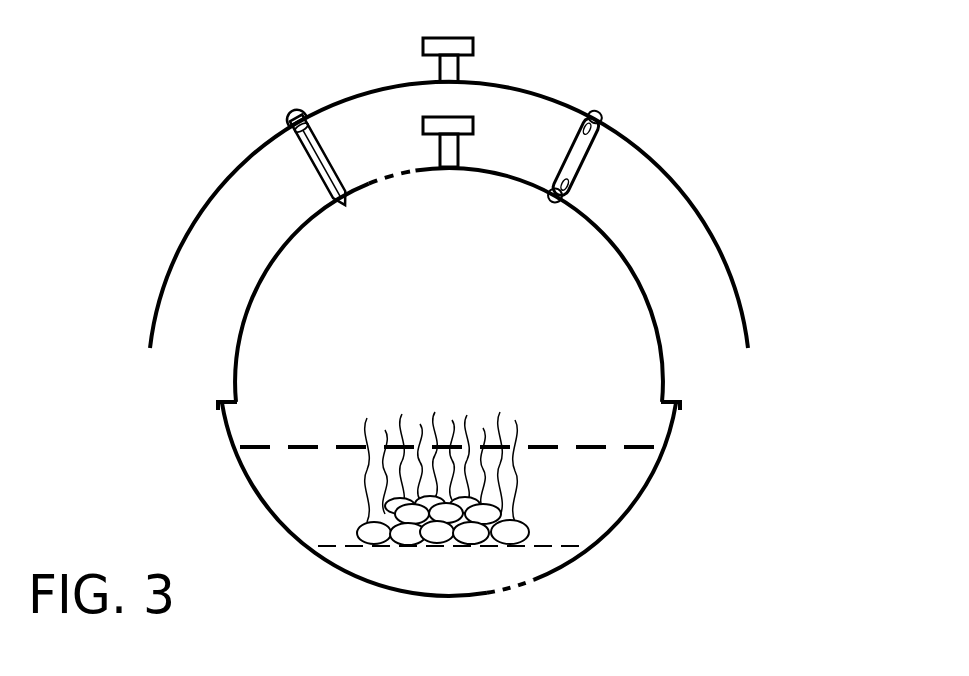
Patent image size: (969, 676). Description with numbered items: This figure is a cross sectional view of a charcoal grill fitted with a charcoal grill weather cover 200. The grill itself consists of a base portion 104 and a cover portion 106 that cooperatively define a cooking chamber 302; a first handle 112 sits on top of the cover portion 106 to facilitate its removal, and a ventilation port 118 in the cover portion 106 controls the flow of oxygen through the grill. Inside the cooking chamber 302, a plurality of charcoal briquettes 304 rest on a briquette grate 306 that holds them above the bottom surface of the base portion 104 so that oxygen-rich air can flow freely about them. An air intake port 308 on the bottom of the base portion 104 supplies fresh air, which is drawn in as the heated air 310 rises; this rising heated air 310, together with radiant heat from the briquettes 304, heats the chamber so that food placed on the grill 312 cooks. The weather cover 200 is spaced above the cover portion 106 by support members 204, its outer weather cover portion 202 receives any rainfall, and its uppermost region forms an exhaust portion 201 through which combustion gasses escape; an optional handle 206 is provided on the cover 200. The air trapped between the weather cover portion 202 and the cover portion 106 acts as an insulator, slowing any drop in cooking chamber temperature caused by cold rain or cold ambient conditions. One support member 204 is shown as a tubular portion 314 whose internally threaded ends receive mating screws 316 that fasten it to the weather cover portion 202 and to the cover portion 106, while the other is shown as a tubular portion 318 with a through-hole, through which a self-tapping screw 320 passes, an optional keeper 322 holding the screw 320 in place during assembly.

The charcoal grill weather cover 200 is at (684, 162).
The exhaust portion 201 is at (503, 74).
The weather cover portion 202 is at (170, 246).
The support members 204 is at (282, 212).
The handle 206 is at (423, 45).
The first handle 112 is at (473, 127).
The ventilation port 118 is at (382, 193).
The cover portion 106 is at (240, 362).
The base portion 104 is at (262, 500).
The cooking chamber 302 is at (593, 340).
The charcoal briquettes 304 is at (346, 488).
The briquette grate 306 is at (364, 548).
The air intake port 308 is at (511, 603).
The heated air 310 is at (534, 432).
The grill 312 is at (318, 432).
The tubular portion 314 is at (578, 170).
The mating screw 316 is at (599, 114).
The tubular portion 318 is at (304, 157).
The screw 320 is at (291, 106).
The keeper 322 is at (310, 127).